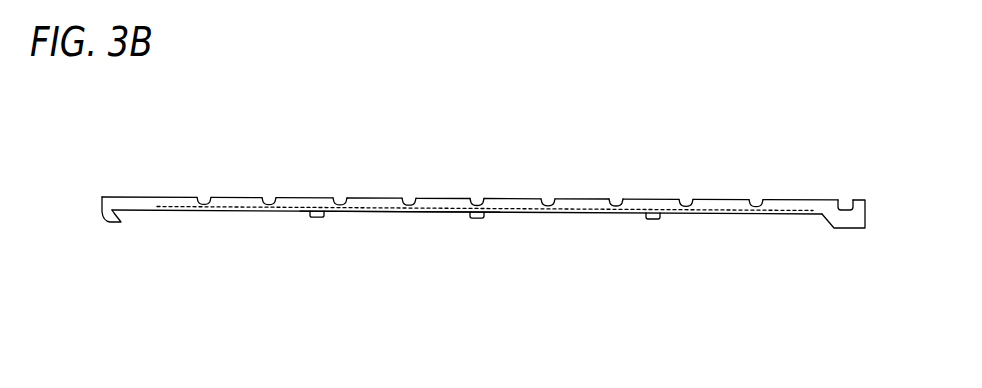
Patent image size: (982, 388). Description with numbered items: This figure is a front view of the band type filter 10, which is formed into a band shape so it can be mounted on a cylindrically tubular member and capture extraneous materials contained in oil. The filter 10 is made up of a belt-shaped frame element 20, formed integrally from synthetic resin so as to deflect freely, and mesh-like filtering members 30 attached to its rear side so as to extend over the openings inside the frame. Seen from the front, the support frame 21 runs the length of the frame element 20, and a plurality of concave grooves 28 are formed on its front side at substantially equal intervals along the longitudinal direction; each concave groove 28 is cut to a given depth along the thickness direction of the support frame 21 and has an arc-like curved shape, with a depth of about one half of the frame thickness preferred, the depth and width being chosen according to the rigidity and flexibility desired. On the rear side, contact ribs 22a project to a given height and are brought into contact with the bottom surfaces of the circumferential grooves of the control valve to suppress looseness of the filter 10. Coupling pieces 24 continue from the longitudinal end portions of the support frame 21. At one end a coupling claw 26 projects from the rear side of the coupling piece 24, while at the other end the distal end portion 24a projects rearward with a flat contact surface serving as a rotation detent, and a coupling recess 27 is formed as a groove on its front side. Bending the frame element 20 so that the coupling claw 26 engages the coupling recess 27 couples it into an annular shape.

The filter 10 is at (652, 185).
The frame element 20 is at (436, 189).
The support frame 21 is at (377, 214).
The contact rib 22a is at (317, 219).
The coupling piece 24 is at (141, 196).
The distal end portion 24a is at (847, 229).
The coupling claw 26 is at (112, 225).
The coupling recess 27 is at (844, 205).
The concave groove 28 is at (205, 197).
The filtering member 30 is at (246, 213).